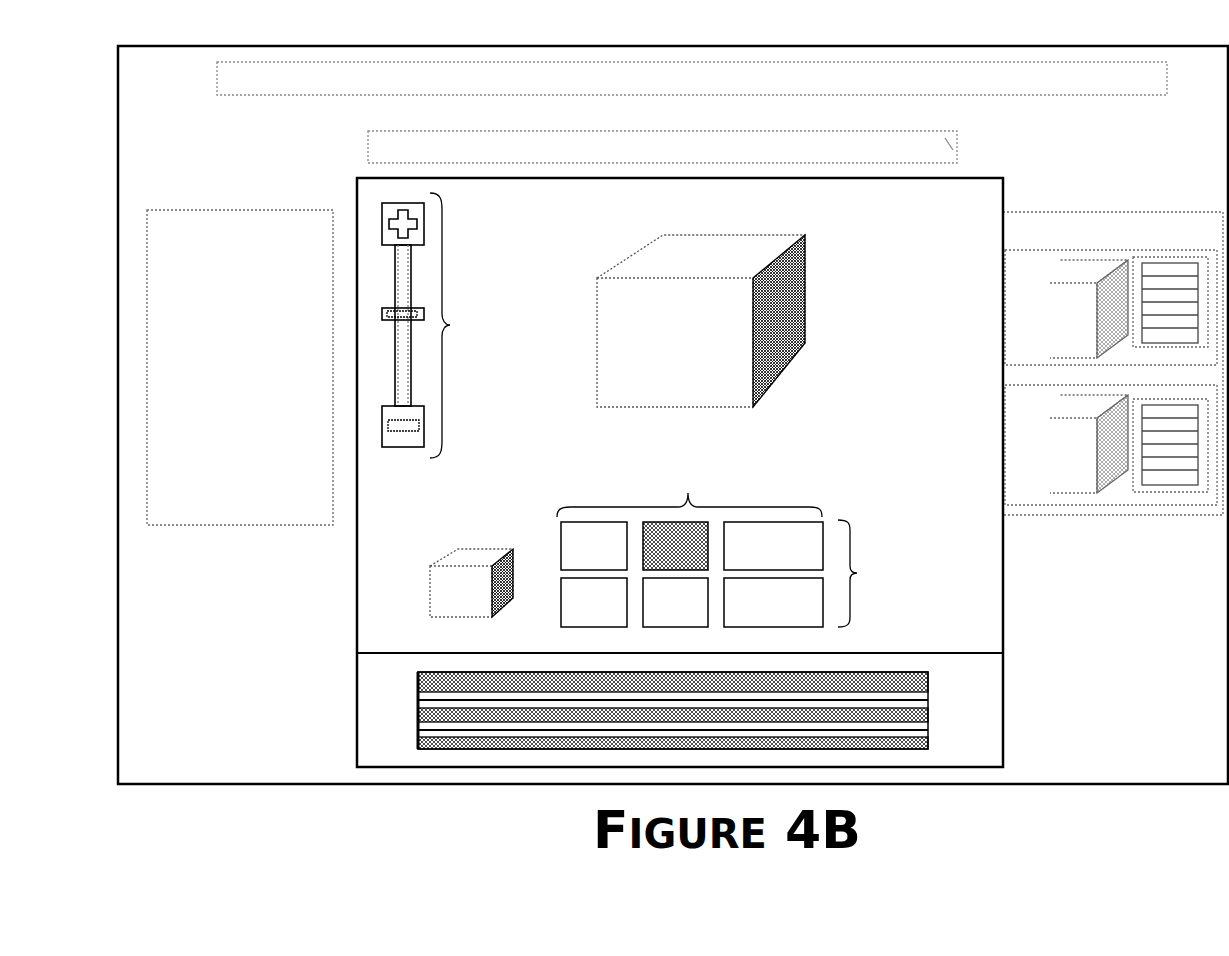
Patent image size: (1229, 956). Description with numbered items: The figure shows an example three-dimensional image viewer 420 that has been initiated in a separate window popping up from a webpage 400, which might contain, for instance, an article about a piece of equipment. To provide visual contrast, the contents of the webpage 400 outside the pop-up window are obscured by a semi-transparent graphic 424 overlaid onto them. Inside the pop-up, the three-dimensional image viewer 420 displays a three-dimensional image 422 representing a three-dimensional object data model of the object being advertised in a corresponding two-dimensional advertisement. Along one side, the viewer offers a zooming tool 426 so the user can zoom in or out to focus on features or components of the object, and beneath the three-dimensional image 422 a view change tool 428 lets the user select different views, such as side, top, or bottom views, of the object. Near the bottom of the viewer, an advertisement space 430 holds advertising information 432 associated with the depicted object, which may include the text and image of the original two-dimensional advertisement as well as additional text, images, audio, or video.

The webpage 400 is at (238, 784).
The 3D image viewer 420 is at (1003, 572).
The 3D image 422 is at (790, 333).
The semi-transparent graphic 424 is at (1128, 745).
The zooming tool 426 is at (436, 237).
The view change tool 428 is at (800, 505).
The advertisement space 430 is at (1003, 710).
The advertising information 432 is at (928, 705).